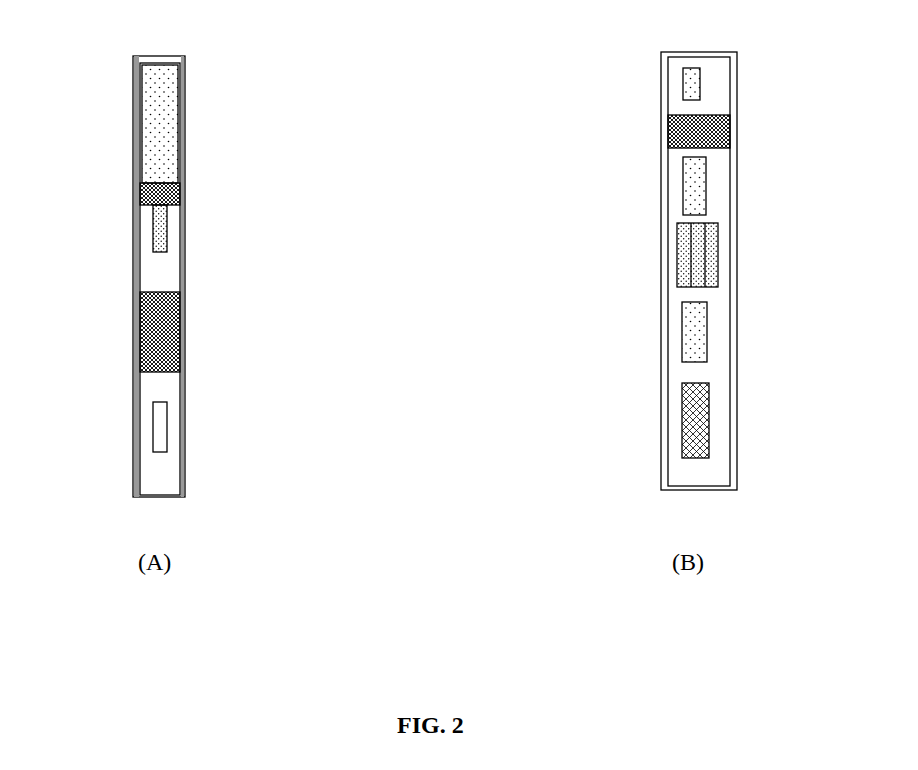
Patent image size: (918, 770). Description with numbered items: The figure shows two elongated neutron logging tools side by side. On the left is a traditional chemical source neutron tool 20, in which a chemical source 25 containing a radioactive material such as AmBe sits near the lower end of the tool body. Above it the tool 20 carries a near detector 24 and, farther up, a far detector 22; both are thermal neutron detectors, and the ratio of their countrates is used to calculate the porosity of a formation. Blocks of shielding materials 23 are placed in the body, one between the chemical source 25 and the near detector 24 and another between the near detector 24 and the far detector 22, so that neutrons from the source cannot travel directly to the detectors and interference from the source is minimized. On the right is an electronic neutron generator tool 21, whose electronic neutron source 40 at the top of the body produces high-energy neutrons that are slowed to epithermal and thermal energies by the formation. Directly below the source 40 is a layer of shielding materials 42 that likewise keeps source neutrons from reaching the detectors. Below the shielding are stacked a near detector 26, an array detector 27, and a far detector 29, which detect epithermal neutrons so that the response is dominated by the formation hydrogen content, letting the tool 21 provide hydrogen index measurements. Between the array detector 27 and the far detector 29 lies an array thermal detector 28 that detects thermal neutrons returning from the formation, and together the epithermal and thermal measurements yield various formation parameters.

In FIG. 2A, the chemical source neutron tool 20 is at (105, 80).
In FIG. 2B, the electronic neutron generator tool 21 is at (630, 66).
In FIG. 2A, the far detector 22 is at (173, 108).
In FIG. 2A, the shielding materials 23 is at (174, 188).
In FIG. 2A, the near detector 24 is at (176, 255).
In FIG. 2A, the chemical source 25 is at (168, 430).
In FIG. 2B, the near detector 26 is at (693, 178).
In FIG. 2B, the array detector 27 is at (680, 255).
In FIG. 2B, the array thermal detector 28 is at (700, 338).
In FIG. 2B, the far detector 29 is at (696, 418).
In FIG. 2B, the electronic neutron source 40 is at (700, 83).
In FIG. 2B, the shielding materials 42 is at (731, 130).